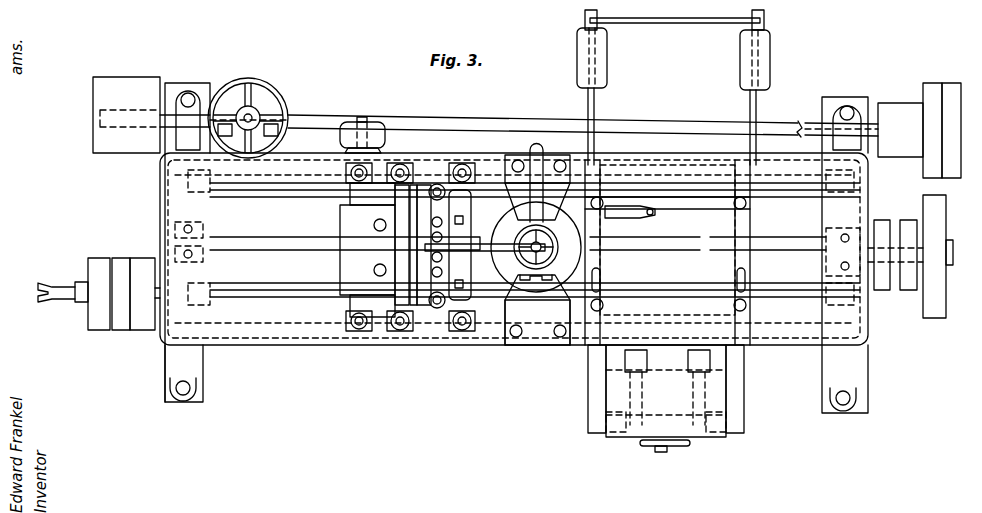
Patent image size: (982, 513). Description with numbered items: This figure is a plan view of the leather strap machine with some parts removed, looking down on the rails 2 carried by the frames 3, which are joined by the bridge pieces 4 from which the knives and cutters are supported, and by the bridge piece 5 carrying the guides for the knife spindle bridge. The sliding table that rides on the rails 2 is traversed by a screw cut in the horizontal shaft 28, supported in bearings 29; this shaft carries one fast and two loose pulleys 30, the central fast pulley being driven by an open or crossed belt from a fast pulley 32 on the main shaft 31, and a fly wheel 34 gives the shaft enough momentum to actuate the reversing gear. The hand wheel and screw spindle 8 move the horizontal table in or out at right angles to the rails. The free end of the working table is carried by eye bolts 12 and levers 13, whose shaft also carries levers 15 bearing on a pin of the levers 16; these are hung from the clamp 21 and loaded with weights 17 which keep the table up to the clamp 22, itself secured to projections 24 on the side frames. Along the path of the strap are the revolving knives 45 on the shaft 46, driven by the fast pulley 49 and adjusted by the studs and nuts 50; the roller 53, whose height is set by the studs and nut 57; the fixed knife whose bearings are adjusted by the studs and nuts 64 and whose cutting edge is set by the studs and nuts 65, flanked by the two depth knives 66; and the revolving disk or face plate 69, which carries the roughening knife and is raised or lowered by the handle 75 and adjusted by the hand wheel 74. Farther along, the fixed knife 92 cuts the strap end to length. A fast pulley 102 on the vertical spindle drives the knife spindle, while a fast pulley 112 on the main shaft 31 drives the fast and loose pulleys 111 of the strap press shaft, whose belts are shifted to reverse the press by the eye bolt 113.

The rails 2 is at (246, 198).
The frames 3 is at (210, 85).
The bridge pieces 4 is at (178, 166).
The bridge piece 5 is at (572, 165).
The hand wheel and screw spindle 8 is at (682, 447).
The eye bolts 12 is at (635, 368).
The levers 13 is at (666, 402).
The levers 15 is at (588, 380).
The levers 16 is at (595, 110).
The weights 17 is at (607, 58).
The clamp 21 is at (700, 204).
The clamp 22 is at (665, 296).
The projections 24 is at (604, 268).
The horizontal shaft 28 is at (290, 248).
The bearings 29 is at (475, 246).
The fast and loose pulleys 30 is at (898, 218).
The main shaft 31 is at (516, 124).
The fast pulley 32 is at (888, 104).
The fly wheel 34 is at (924, 308).
The revolving knives 45 is at (367, 250).
The shaft 46 is at (372, 250).
The fast pulley 49 is at (385, 126).
The studs and nuts 50 is at (346, 172).
The roller 53 is at (432, 245).
The studs and nut 57 is at (410, 166).
The studs and nuts 64 is at (468, 166).
The studs and nuts 65 is at (437, 184).
The knives 66 is at (421, 257).
The revolving horizontal disk or face plate 69 is at (440, 252).
The hand wheel 74 is at (558, 237).
The handle 75 is at (545, 165).
The fixed knife 92 is at (630, 221).
The fast pulley 102 is at (276, 90).
The fast and loose pulleys 111 is at (112, 256).
The fast pulley 112 is at (120, 78).
The eye bolt 113 is at (40, 284).